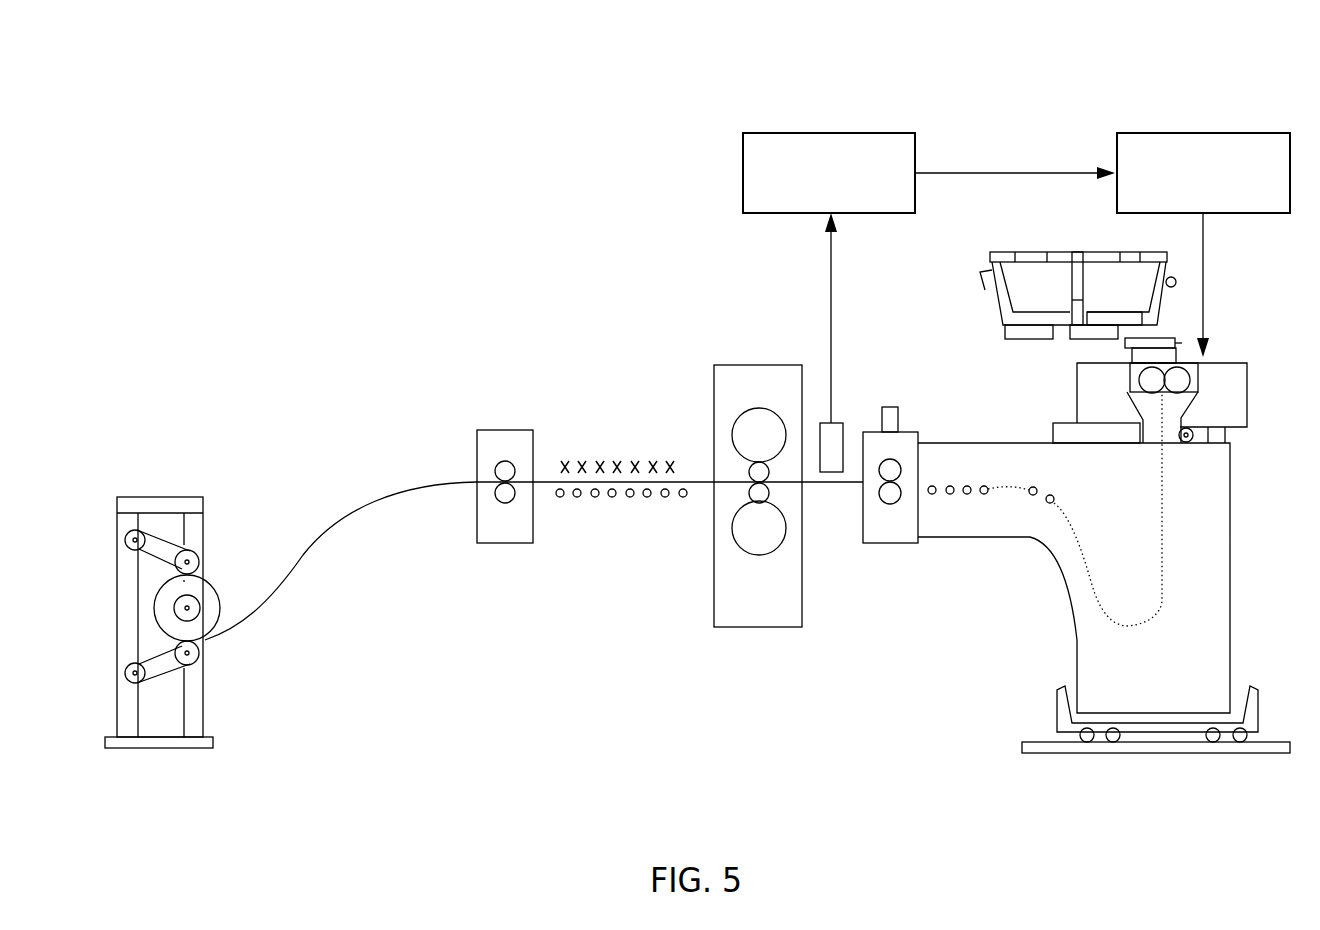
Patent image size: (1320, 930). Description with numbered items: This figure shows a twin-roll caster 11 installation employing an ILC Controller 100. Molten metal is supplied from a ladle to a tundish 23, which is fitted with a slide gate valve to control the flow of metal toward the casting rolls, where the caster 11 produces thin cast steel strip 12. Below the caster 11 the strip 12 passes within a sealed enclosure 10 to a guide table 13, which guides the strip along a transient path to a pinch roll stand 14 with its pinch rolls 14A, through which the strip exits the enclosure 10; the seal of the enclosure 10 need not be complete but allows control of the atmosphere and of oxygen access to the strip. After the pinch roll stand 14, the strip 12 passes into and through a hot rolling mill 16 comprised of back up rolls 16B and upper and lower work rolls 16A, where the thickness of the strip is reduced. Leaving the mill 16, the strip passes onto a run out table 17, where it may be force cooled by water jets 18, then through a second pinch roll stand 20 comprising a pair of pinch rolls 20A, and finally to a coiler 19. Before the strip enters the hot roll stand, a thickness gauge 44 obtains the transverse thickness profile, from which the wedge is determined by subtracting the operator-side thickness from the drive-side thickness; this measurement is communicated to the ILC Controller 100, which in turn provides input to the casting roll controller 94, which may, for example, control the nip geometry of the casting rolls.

The sealed enclosure 10 is at (1233, 590).
The twin-roll caster 11 is at (1220, 380).
The thin cast steel strip 12 is at (1165, 496).
The guide table 13 is at (951, 522).
The pinch roll stand 14 is at (905, 440).
The pinch rolls 14A is at (893, 507).
The hot rolling mill 16 is at (760, 350).
The upper and lower work rolls 16A is at (747, 493).
The backup rolls 16B is at (760, 553).
The run out table 17 is at (645, 498).
The water jets 18 is at (657, 457).
The coiler 19 is at (245, 678).
The pinch roll stand 20 is at (505, 443).
The pinch rolls 20A is at (498, 467).
The tundish 23 is at (975, 303).
The thickness gauge 44 is at (833, 420).
The casting roll controller 94 is at (1202, 133).
The ILC Controller 100 is at (828, 133).